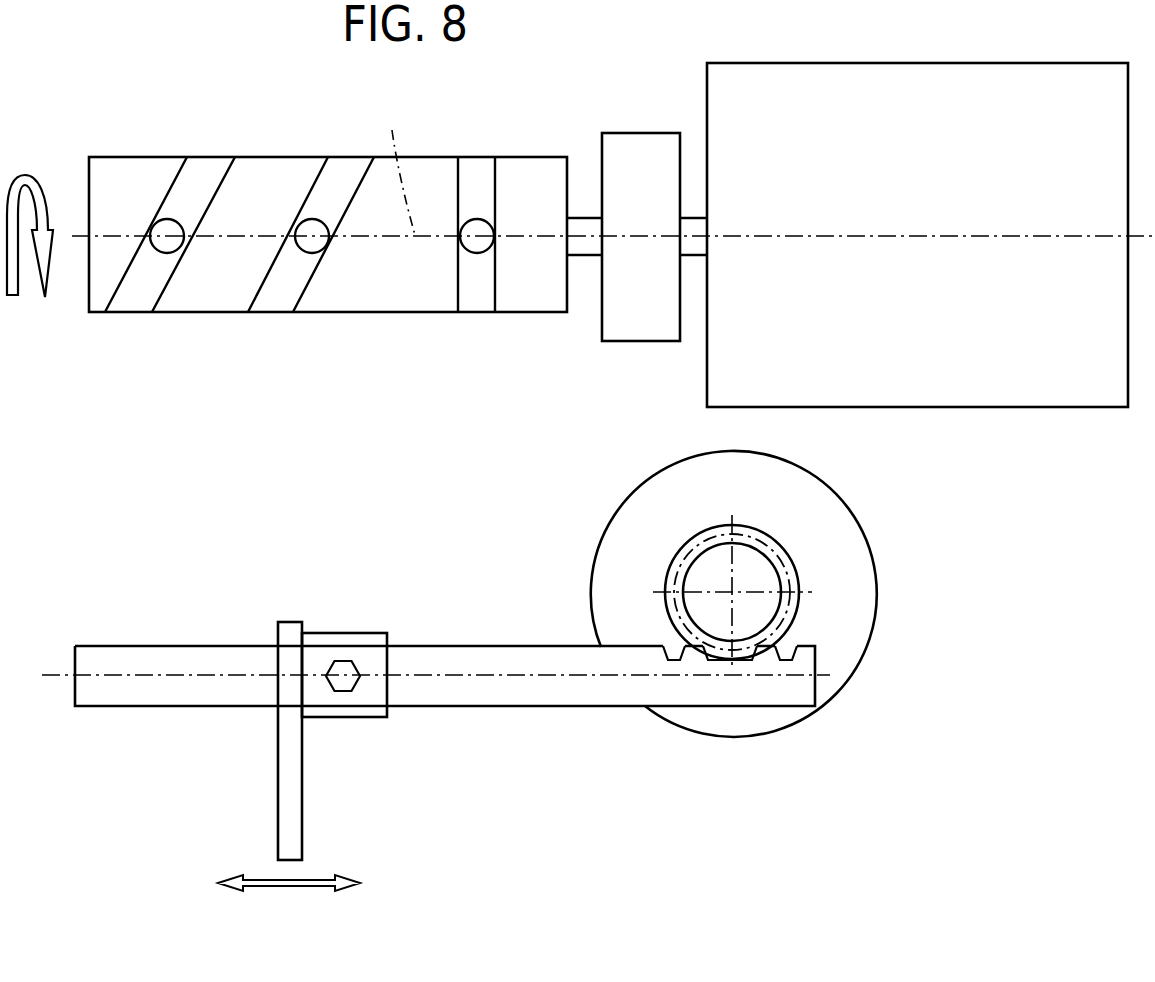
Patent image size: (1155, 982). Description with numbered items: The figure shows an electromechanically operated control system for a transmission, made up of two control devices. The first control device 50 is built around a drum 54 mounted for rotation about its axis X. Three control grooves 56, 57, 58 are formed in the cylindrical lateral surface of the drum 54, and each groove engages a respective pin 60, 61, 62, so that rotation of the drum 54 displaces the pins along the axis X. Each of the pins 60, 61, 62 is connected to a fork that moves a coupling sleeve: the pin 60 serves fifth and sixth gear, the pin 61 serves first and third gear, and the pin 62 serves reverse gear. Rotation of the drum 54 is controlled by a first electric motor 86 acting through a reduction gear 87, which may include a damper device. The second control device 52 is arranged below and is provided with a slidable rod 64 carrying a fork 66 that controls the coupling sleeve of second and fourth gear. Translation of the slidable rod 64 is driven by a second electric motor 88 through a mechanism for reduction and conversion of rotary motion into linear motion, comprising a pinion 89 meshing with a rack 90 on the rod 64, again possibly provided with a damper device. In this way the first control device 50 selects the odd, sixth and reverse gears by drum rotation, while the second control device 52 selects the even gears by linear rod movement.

The first control device 50 is at (531, 124).
The second control device 52 is at (505, 594).
The drum 54 is at (370, 295).
The control groove 56 is at (202, 163).
The control groove 57 is at (347, 170).
The control groove 58 is at (477, 168).
The pin 60 is at (170, 243).
The pin 61 is at (313, 245).
The pin 62 is at (480, 243).
The slidable rod 64 is at (207, 648).
The fork 66 is at (297, 768).
The first electric motor 86 is at (870, 88).
The reduction gear 87 is at (635, 140).
The second electric motor 88 is at (850, 540).
The pinion 89 is at (707, 537).
The rack 90 is at (797, 643).